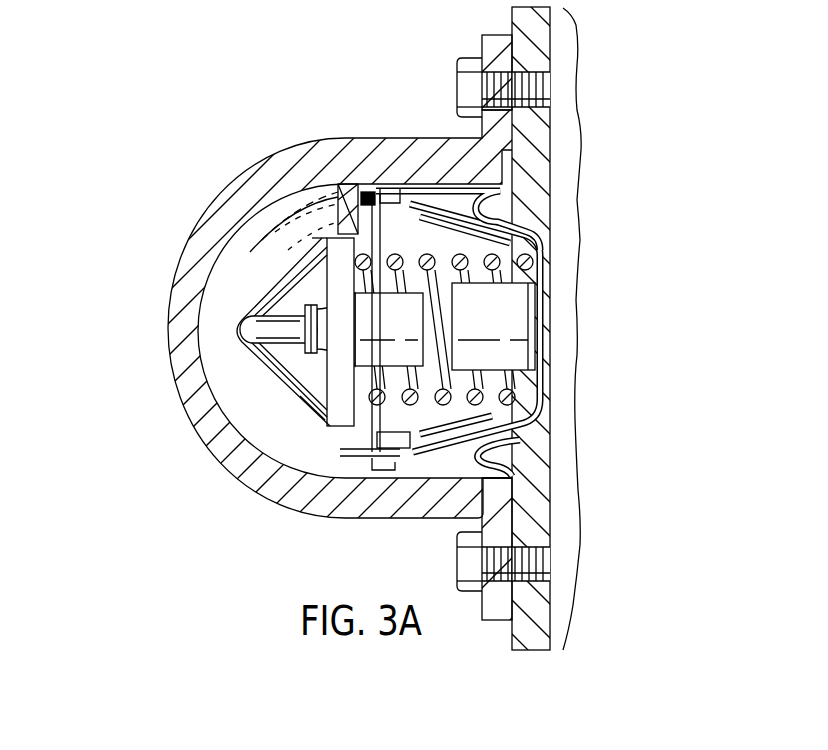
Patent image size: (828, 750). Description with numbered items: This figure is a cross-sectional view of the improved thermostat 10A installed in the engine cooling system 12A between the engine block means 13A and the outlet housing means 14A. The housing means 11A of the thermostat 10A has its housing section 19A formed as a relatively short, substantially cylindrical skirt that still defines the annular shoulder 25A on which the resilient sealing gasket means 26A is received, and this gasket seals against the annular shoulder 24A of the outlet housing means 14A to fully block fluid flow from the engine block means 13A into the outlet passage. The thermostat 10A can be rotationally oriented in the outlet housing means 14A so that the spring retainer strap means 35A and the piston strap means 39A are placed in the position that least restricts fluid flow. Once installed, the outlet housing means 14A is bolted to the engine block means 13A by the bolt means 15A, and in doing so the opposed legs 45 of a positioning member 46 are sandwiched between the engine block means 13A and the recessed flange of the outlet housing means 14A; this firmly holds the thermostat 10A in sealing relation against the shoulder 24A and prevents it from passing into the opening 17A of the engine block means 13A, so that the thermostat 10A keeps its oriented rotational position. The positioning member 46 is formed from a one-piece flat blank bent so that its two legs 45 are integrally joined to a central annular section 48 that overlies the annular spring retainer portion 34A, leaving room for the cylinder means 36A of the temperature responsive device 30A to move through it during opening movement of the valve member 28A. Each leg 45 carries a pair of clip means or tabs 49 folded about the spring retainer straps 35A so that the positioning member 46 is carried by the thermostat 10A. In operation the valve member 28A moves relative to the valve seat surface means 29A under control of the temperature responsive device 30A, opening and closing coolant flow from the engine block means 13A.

The thermostat 10A is at (312, 430).
The housing means 11A is at (377, 482).
The engine cooling system 12A is at (618, 97).
The engine block means 13A is at (544, 136).
The outlet housing means 14A is at (300, 498).
The bolt means 15A is at (467, 63).
The opening 17A is at (515, 480).
The housing section 19A is at (395, 185).
The annular shoulder 24A is at (346, 190).
The annular shoulder 25A is at (340, 207).
The resilient sealing gasket means 26A is at (368, 190).
The valve member 28A is at (350, 282).
The valve seat surface means 29A is at (390, 420).
The temperature responsive device 30A is at (540, 341).
The annular spring retainer portion 34A is at (545, 262).
The spring retainer strap means 35A is at (447, 208).
The cylinder means 36A is at (525, 300).
The piston strap means 39A is at (270, 382).
The legs 45 is at (505, 163).
The positioning member 46 is at (540, 210).
The central annular section 48 is at (540, 382).
The clip means or tabs 49 is at (490, 246).